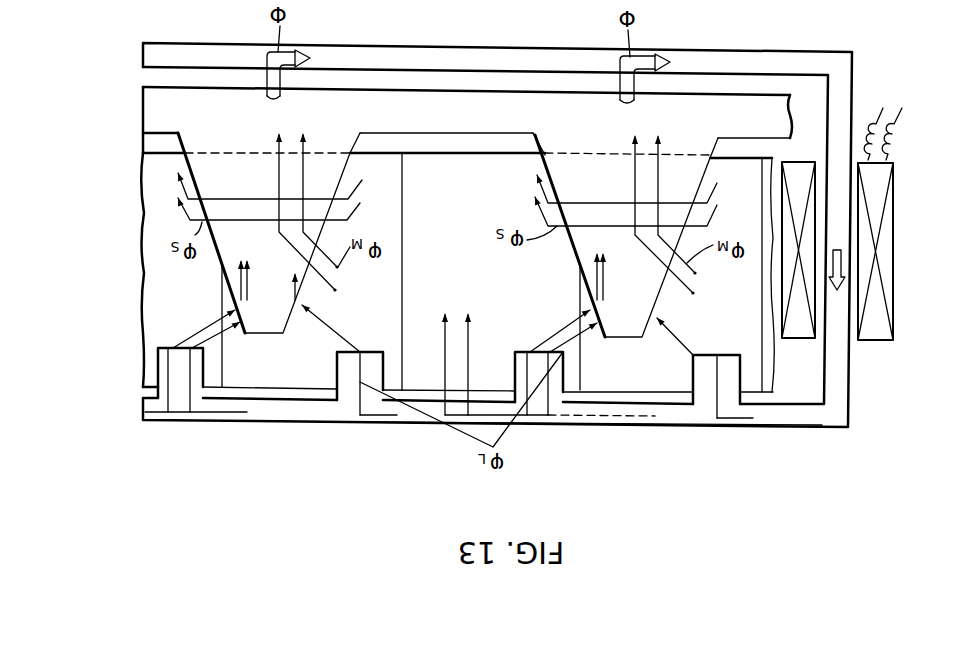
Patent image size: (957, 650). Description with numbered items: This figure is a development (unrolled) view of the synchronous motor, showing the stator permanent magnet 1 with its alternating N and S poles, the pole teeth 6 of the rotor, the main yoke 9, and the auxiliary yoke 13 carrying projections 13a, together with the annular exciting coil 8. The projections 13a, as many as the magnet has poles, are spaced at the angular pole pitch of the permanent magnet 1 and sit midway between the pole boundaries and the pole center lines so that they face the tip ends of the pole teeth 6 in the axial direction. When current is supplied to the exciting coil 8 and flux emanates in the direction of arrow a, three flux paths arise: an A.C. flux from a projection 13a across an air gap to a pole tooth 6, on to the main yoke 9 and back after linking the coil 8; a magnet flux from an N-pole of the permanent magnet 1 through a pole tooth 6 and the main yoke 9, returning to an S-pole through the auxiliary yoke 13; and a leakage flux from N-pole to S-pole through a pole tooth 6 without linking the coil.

The permanent magnet 1 is at (273, 367).
The pole teeth 6 is at (496, 216).
The annular exciting coil 8 is at (873, 327).
The main yoke 9 is at (245, 200).
The auxiliary yoke 13 is at (618, 413).
The projection 13a is at (723, 377).
The direction of magnetic flux a is at (842, 262).